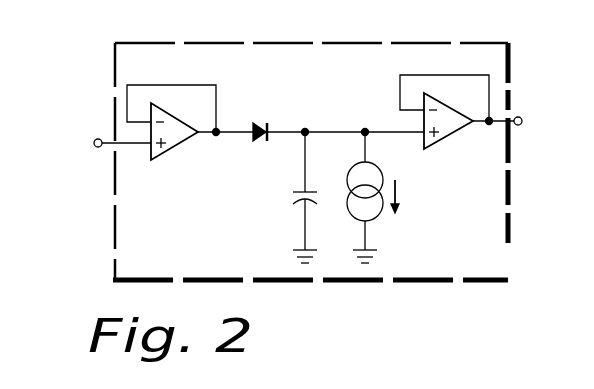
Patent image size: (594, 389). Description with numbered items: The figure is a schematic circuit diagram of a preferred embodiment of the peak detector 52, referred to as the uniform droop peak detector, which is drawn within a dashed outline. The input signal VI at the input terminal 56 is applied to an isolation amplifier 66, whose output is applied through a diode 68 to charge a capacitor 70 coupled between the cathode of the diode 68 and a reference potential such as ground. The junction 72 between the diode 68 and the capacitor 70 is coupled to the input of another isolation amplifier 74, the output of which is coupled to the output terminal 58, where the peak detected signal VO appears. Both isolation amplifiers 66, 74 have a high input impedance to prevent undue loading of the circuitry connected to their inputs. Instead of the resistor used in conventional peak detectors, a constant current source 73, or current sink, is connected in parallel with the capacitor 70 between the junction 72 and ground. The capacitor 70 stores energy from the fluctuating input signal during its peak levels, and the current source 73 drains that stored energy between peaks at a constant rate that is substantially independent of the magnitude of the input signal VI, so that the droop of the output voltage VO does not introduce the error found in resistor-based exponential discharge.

The peak detector 52 is at (462, 43).
The input terminal 56 is at (96, 147).
The output terminal 58 is at (521, 125).
The isolation amplifier 66 is at (165, 160).
The diode 68 is at (257, 124).
The capacitor 70 is at (292, 197).
The junction 72 is at (306, 131).
The current source 73 is at (351, 214).
The isolation amplifier 74 is at (438, 148).